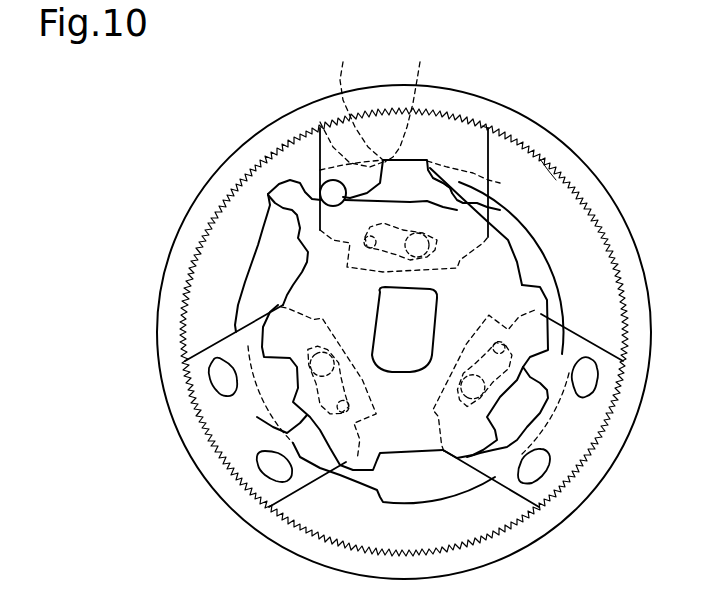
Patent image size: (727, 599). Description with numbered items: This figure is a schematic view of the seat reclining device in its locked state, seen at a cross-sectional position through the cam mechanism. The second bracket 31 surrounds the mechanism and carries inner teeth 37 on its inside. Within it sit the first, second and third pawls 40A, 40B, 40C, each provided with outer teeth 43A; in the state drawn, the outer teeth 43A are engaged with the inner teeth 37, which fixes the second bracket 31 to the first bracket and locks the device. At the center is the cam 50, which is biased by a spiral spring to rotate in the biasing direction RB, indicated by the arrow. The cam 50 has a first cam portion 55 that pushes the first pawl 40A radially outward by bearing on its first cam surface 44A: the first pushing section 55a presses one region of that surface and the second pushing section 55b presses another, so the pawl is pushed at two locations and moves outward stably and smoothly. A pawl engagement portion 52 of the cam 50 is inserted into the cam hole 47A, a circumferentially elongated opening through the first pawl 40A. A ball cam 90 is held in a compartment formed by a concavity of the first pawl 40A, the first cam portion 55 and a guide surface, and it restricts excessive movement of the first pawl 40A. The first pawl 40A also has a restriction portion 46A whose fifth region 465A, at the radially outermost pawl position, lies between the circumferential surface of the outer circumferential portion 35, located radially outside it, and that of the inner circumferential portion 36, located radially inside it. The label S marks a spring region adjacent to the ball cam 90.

The second bracket 31 is at (240, 148).
The outer circumferential portion 35 is at (318, 111).
The inner circumferential portion 36 is at (540, 252).
The inner teeth 37 is at (556, 180).
The first pawl 40A is at (483, 153).
The second pawl 40B is at (227, 440).
The third pawl 40C is at (587, 443).
The outer teeth 43A is at (485, 126).
The first cam surface 44A is at (447, 193).
The restriction portion 46A is at (414, 102).
The fifth region 465A is at (406, 112).
The cam hole 47A is at (360, 273).
The cam 50 is at (290, 267).
The pawl engagement portion 52 is at (460, 265).
The first cam portion 55 is at (419, 189).
The first pushing section 55a is at (483, 200).
The second pushing section 55b is at (298, 213).
The ball cam 90 is at (297, 183).
The spring S is at (267, 190).
The biasing direction RB is at (420, 403).